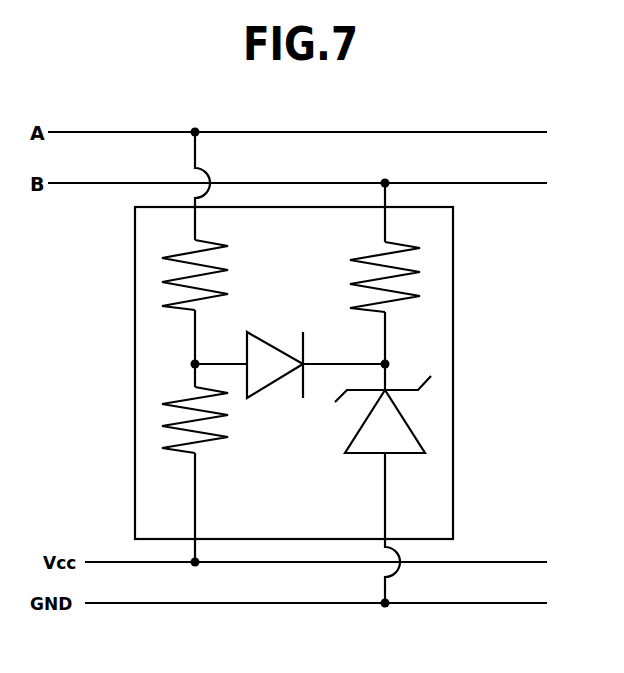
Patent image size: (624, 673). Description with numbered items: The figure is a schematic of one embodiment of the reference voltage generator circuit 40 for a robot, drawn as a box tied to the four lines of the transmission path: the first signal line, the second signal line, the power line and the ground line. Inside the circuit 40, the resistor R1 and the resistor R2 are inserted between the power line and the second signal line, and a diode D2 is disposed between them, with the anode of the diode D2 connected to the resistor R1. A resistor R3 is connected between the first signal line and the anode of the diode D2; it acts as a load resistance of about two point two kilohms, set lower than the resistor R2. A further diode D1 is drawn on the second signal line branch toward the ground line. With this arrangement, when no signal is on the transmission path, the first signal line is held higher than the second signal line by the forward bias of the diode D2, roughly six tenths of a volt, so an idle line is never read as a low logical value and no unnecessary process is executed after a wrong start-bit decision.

The reference voltage generator circuit 40 is at (420, 208).
The resistor R1 is at (146, 409).
The resistor R2 is at (437, 279).
The resistor R3 is at (146, 264).
The Zener diode D1 is at (408, 423).
The diode D2 is at (278, 350).